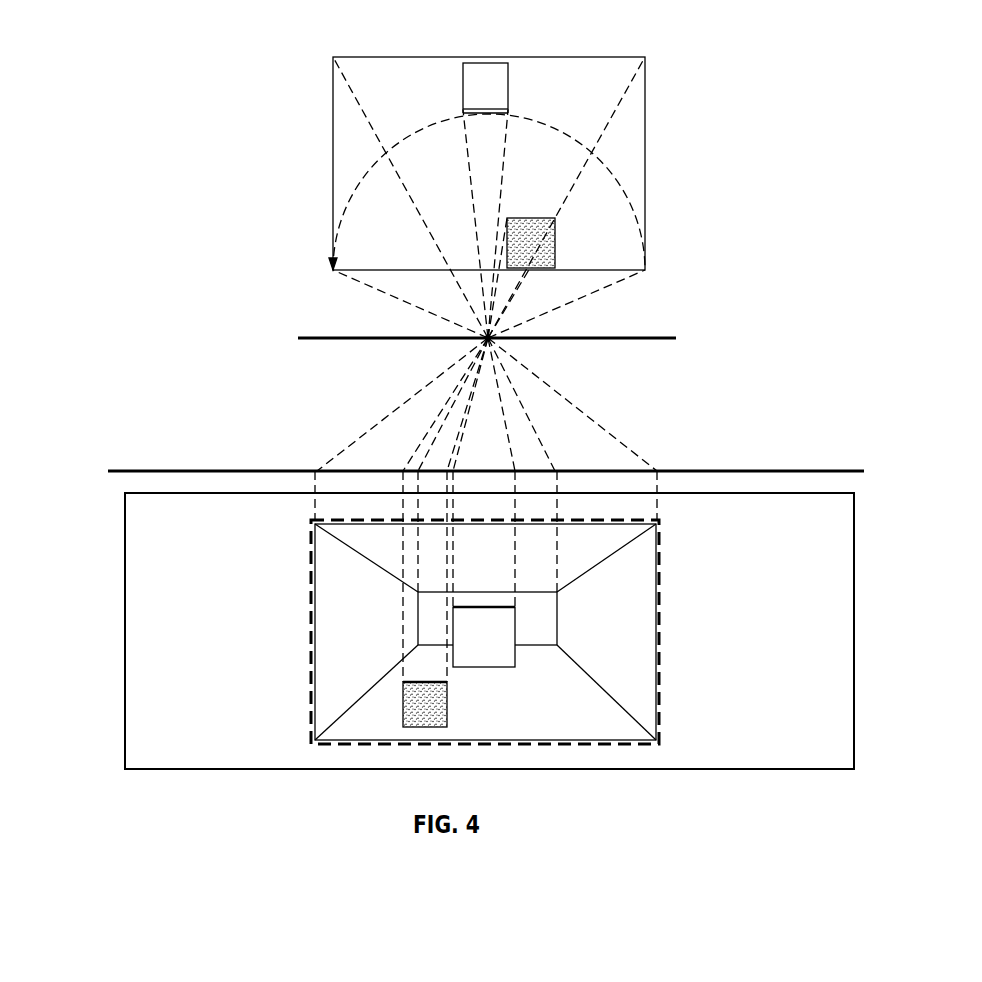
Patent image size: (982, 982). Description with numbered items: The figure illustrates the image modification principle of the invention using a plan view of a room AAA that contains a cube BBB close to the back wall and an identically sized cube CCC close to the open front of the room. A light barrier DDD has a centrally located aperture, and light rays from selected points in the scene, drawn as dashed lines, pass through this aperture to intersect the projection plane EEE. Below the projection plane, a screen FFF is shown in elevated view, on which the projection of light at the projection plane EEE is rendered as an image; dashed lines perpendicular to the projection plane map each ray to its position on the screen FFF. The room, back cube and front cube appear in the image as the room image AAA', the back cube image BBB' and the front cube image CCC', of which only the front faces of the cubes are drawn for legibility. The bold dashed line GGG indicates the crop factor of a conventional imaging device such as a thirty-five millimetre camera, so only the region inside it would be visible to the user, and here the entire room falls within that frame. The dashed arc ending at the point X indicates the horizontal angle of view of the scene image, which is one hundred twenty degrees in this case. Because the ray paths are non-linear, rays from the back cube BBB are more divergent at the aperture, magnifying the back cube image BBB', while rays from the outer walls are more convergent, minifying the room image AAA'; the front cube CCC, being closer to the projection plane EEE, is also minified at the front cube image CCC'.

The room AAA is at (465, 163).
The cube close to the back wall BBB is at (460, 88).
The cube close to the front of the room CCC is at (556, 243).
The end of dashed arc X is at (323, 276).
The light barrier DDD is at (460, 338).
The projection plane EEE is at (461, 469).
The screen FFF is at (465, 631).
The crop factor frame GGG is at (508, 639).
The image of the room AAA' is at (452, 632).
The image of the back cube BBB' is at (510, 645).
The image of the front cube CCC' is at (453, 705).